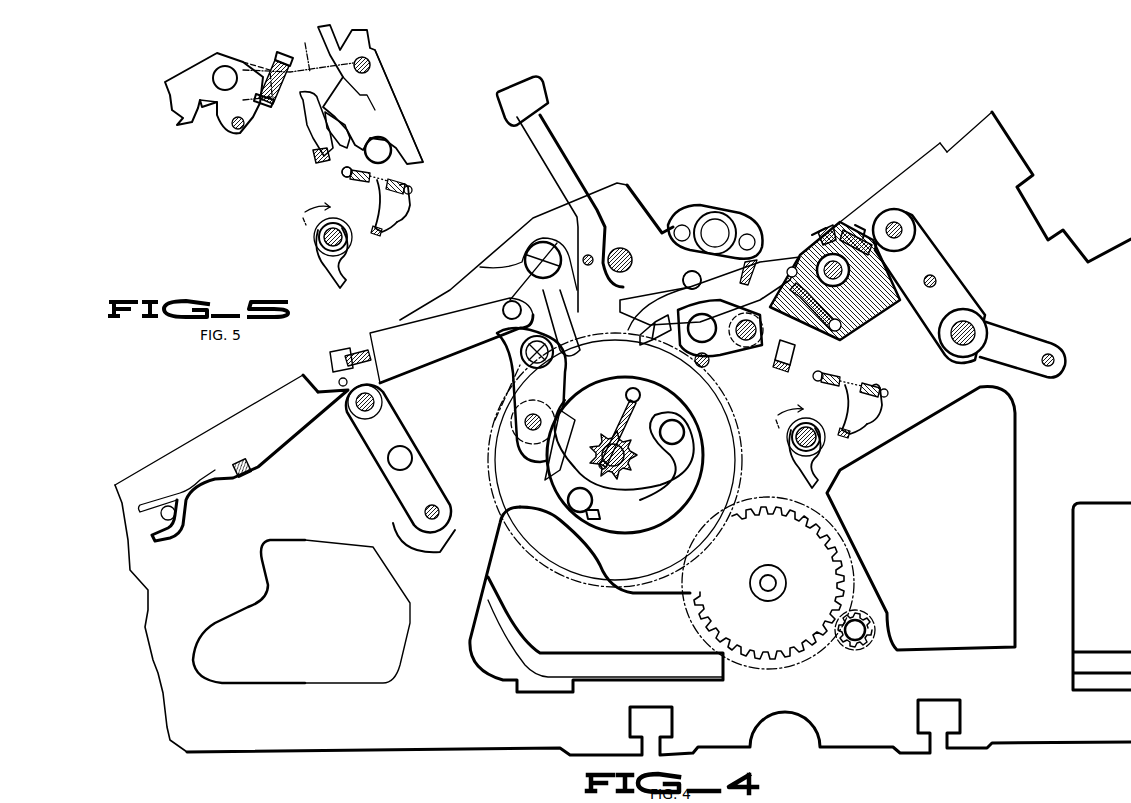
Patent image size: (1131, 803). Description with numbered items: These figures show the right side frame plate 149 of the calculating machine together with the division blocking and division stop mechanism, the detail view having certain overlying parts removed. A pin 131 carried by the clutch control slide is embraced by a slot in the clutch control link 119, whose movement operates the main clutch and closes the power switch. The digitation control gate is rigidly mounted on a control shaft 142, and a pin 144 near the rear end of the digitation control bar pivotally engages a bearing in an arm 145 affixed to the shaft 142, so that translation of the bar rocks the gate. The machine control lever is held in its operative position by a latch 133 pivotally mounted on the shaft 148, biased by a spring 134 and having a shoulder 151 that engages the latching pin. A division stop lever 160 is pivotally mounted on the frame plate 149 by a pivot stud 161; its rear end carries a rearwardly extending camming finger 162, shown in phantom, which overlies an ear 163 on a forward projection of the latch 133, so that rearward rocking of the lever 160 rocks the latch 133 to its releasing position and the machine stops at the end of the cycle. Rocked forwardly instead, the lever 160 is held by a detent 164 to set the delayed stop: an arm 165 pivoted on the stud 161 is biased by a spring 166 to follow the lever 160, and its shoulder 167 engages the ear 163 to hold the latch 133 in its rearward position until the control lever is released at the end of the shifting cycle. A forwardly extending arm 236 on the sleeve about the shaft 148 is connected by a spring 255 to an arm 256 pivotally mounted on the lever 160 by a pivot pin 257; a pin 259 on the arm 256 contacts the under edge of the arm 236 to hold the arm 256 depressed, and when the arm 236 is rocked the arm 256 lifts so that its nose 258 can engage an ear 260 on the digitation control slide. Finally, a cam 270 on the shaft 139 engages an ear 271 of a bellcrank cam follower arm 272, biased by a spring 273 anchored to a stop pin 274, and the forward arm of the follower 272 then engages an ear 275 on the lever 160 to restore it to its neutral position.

In FIG. 4, the clutch control link 119 is at (265, 440).
In FIG. 4, the pin 131 is at (250, 478).
In FIG. 5, the latch 133 is at (390, 87).
In FIG. 4, the latch 133 is at (795, 237).
In FIG. 4, the spring 134 is at (878, 215).
In FIG. 5, the shaft 139 is at (322, 243).
In FIG. 4, the shaft 139 is at (798, 445).
In FIG. 4, the control shaft 142 is at (965, 332).
In FIG. 4, the pin 144 is at (897, 230).
In FIG. 4, the arm 145 is at (937, 266).
In FIG. 5, the shaft 148 is at (368, 62).
In FIG. 4, the shaft 148 is at (826, 272).
In FIG. 4, the right side frame plate 149 is at (1093, 316).
In FIG. 5, the shoulder 151 is at (392, 150).
In FIG. 5, the division stop lever 160 is at (192, 80).
In FIG. 4, the division stop lever 160 is at (560, 162).
In FIG. 5, the pivot stud 161 is at (226, 66).
In FIG. 4, the pivot stud 161 is at (685, 273).
In FIG. 5, the finger 162 is at (308, 68).
In FIG. 5, the ear 163 is at (370, 94).
In FIG. 4, the detent 164 is at (568, 315).
In FIG. 5, the arm 165 is at (300, 93).
In FIG. 5, the spring 166 is at (277, 72).
In FIG. 5, the shoulder 167 is at (347, 127).
In FIG. 4, the arm 236 is at (800, 257).
In FIG. 4, the spring 255 is at (846, 309).
In FIG. 4, the arm 256 is at (897, 307).
In FIG. 5, the pivot pin 257 is at (236, 130).
In FIG. 4, the pivot pin 257 is at (680, 335).
In FIG. 4, the nose 258 is at (850, 236).
In FIG. 4, the pin 259 is at (708, 280).
In FIG. 4, the ear 260 is at (825, 237).
In FIG. 5, the cam 270 is at (338, 272).
In FIG. 4, the cam 270 is at (808, 478).
In FIG. 5, the ear 271 is at (376, 218).
In FIG. 4, the ear 271 is at (848, 424).
In FIG. 5, the cam follower arm 272 is at (403, 212).
In FIG. 4, the cam follower arm 272 is at (870, 422).
In FIG. 5, the spring 273 is at (408, 185).
In FIG. 4, the spring 273 is at (880, 385).
In FIG. 5, the stop pin 274 is at (345, 176).
In FIG. 4, the stop pin 274 is at (815, 379).
In FIG. 5, the ear 275 is at (318, 162).
In FIG. 4, the ear 275 is at (793, 366).